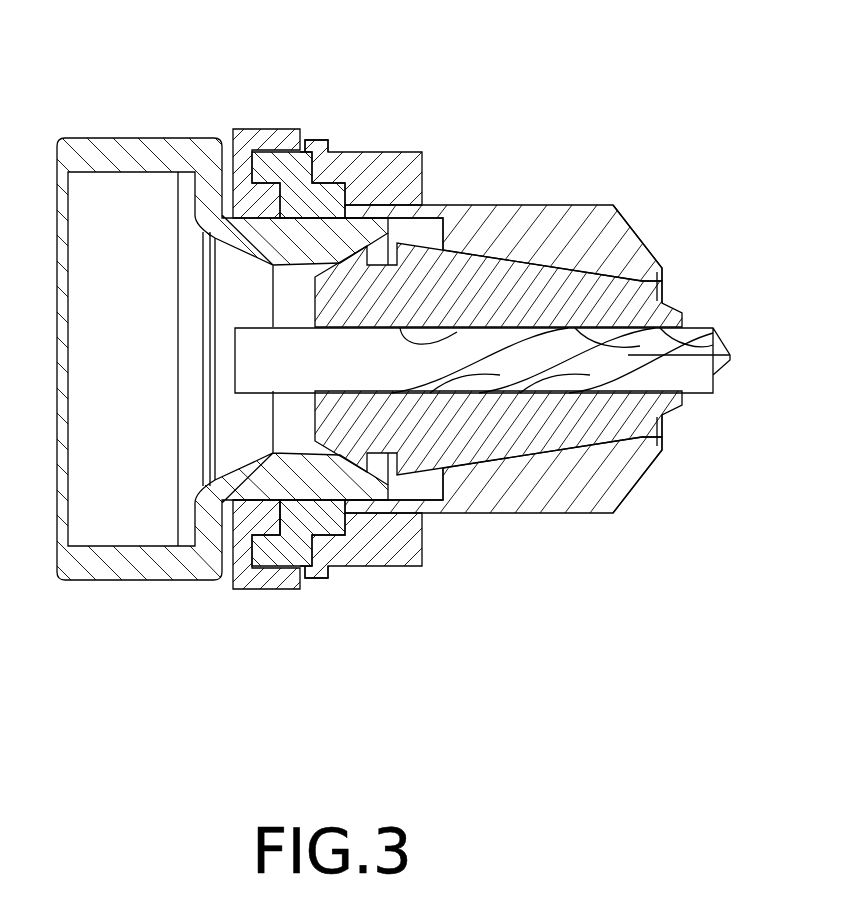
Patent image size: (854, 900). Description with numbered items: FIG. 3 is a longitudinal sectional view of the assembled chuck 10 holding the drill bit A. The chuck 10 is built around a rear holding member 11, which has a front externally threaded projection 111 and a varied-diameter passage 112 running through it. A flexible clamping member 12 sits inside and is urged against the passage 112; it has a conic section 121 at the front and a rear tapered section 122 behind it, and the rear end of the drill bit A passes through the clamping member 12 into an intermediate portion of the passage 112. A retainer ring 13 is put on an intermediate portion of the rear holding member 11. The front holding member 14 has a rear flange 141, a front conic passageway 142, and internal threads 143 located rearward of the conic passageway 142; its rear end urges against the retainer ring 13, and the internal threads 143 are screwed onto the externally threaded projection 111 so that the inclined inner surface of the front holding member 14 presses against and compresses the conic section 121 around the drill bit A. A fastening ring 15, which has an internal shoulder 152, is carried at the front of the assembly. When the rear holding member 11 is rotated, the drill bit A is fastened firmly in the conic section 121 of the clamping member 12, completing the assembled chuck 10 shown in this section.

The chuck 10 is at (396, 378).
The rear holding member 11 is at (93, 138).
The front externally threaded projection 111 is at (360, 212).
The varied-diameter passage 112 is at (443, 217).
The flexible clamping member 12 is at (523, 437).
The conic section 121 is at (628, 232).
The rear tapered section 122 is at (281, 503).
The retainer ring 13 is at (263, 128).
The body 14 is at (560, 213).
The rear flange 141 is at (314, 150).
The front conic passageway 142 is at (653, 447).
The internal threads 143 is at (417, 503).
The fastening ring 15 is at (397, 160).
The internal shoulder 152 is at (334, 560).
The drill bit A is at (688, 328).